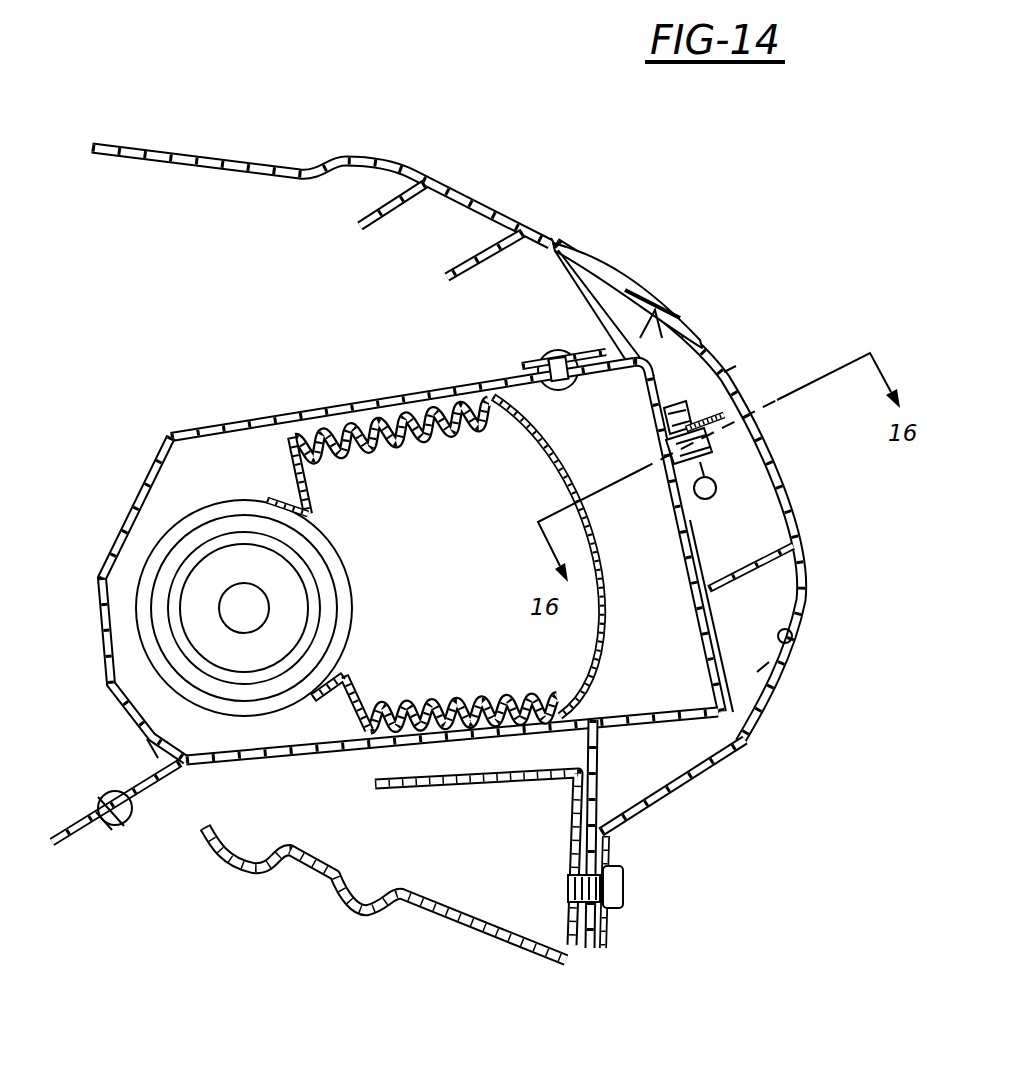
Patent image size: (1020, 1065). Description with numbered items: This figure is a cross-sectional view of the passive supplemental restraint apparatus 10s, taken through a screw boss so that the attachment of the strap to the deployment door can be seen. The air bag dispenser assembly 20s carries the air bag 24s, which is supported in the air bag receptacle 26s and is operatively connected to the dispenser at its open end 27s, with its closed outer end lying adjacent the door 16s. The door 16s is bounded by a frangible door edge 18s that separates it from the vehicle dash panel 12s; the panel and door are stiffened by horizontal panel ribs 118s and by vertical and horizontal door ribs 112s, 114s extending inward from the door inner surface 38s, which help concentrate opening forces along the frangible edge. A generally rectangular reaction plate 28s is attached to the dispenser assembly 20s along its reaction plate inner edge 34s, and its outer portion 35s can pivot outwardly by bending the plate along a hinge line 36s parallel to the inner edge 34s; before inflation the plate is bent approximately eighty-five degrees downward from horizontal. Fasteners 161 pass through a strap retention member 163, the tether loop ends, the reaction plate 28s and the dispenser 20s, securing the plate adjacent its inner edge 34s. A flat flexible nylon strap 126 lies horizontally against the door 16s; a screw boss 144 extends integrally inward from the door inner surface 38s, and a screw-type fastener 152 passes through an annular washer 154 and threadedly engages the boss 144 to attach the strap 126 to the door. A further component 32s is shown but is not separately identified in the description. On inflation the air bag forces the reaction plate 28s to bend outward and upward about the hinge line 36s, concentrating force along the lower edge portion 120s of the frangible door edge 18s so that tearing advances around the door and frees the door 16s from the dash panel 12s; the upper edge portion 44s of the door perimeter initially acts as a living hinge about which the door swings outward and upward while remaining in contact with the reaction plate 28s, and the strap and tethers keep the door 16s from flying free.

The passive supplemental restraint apparatus 10s is at (792, 221).
The vehicle dash panel 12s is at (205, 140).
The door 16s is at (741, 363).
The frangible door edge 18s is at (565, 228).
The air bag dispenser assembly 20s is at (140, 462).
The air bag 24s is at (322, 432).
The air bag receptacle 26s is at (372, 768).
The open end 27s is at (310, 515).
The reaction plate 28s is at (686, 632).
The bottom wall 32s is at (717, 703).
The reaction plate inner edge 34s is at (492, 376).
The outer portion 35s is at (678, 568).
The hinge line 36s is at (597, 322).
The door inner surface 38s is at (793, 640).
The upper edge portion 44s is at (560, 232).
The vertical door ribs 112s is at (760, 670).
The horizontal door ribs 114s is at (655, 318).
The horizontal panel ribs 118s is at (452, 258).
The lower edge portion 120s is at (748, 742).
The strap 126 is at (697, 401).
The first screw boss 144 is at (698, 421).
The screw-type fastener 152 is at (698, 418).
The annular washer 154 is at (714, 490).
The fasteners 161 is at (558, 348).
The strap retention member 163 is at (525, 357).